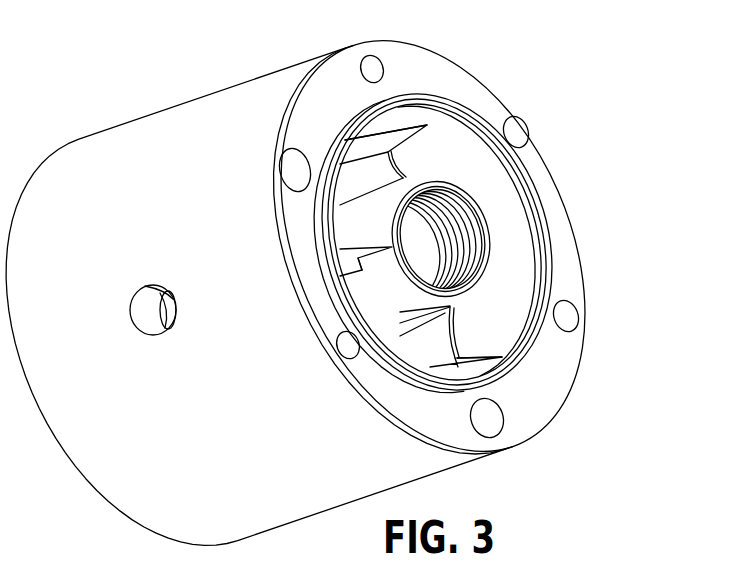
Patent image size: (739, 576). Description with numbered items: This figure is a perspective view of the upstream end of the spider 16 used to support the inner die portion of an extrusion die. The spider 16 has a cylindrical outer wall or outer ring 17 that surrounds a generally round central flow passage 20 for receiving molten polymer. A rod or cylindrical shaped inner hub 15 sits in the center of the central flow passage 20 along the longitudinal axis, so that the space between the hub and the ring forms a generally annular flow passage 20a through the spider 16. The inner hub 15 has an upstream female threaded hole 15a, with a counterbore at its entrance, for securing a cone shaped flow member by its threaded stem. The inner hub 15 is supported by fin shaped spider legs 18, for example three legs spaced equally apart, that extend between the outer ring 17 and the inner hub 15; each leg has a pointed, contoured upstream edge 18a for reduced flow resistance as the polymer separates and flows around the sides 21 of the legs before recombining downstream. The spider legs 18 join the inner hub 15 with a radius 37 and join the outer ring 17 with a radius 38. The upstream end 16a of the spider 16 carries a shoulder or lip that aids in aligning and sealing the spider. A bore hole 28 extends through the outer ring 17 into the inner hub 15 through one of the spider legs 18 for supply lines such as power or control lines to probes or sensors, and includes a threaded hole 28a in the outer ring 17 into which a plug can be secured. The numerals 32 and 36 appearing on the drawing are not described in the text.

The inner hub 15 is at (472, 202).
The upstream female threaded hole 15a is at (480, 227).
The spider 16 is at (112, 92).
The upstream end 16a is at (533, 200).
The outer ring 17 is at (450, 62).
The spider legs 18 is at (377, 178).
The upstream edge 18a is at (403, 173).
The central flow passage 20 is at (533, 275).
The annular flow passage 20a is at (520, 312).
The sides 21 is at (357, 180).
The bore holes 28 is at (140, 293).
The threaded hole 28a is at (145, 324).
The bolt hole 32 is at (513, 134).
The threaded bore 36 is at (480, 268).
The radius 37 is at (422, 346).
The radius 38 is at (378, 135).